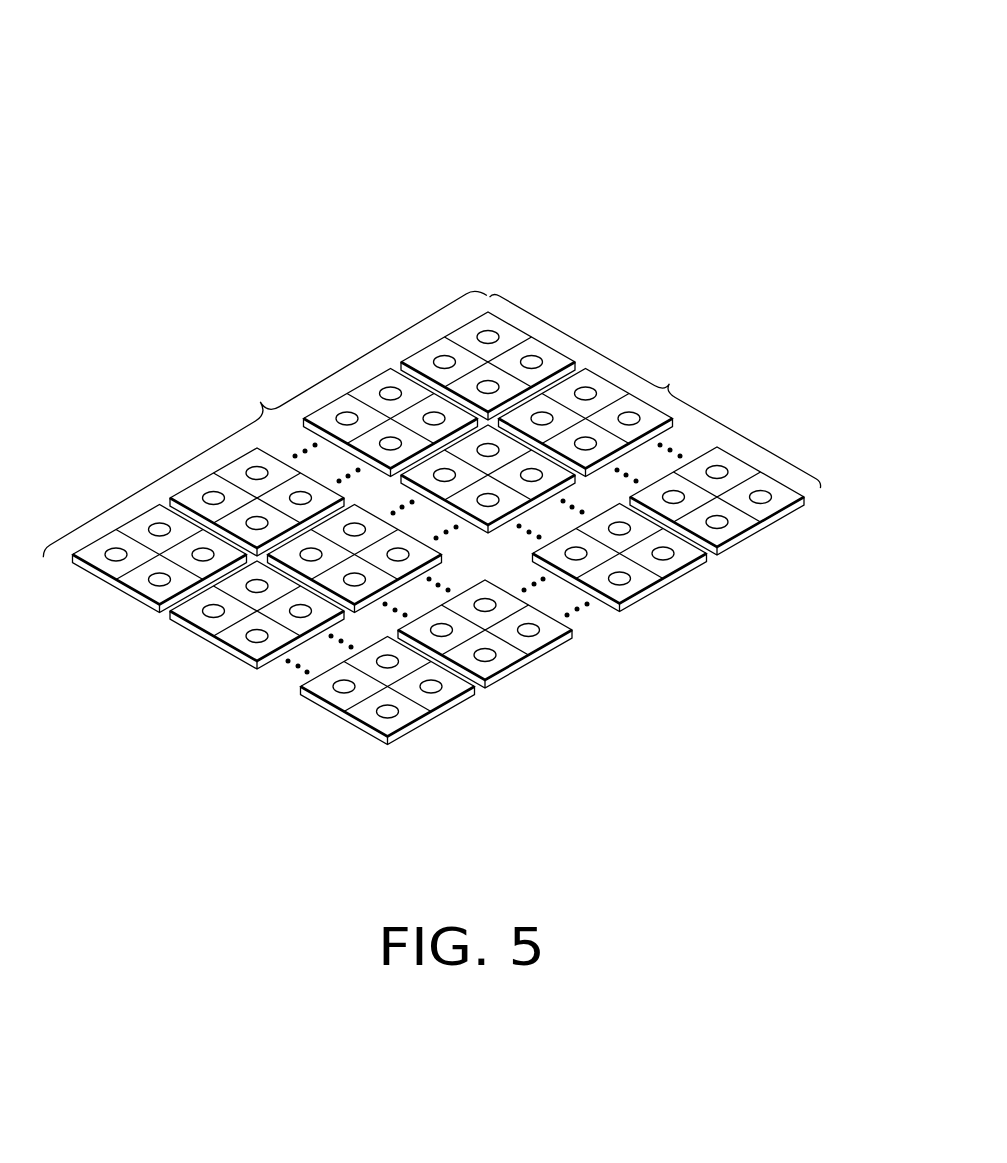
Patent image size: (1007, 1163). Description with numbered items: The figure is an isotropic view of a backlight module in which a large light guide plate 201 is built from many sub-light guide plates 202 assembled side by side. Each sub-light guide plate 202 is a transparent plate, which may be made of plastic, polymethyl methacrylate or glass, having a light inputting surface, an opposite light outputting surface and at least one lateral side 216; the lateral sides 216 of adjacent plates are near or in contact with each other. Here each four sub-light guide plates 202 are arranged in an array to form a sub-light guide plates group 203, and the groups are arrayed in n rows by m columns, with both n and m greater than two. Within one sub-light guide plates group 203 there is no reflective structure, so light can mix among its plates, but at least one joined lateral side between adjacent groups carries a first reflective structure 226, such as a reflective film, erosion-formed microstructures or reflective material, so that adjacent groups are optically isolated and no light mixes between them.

The light guide plate 201 is at (388, 44).
The sub-light guide plate 202 is at (396, 724).
The sub-light guide plates group 203 is at (299, 715).
The lateral side 216 is at (366, 723).
The first reflective structure 226 is at (457, 703).